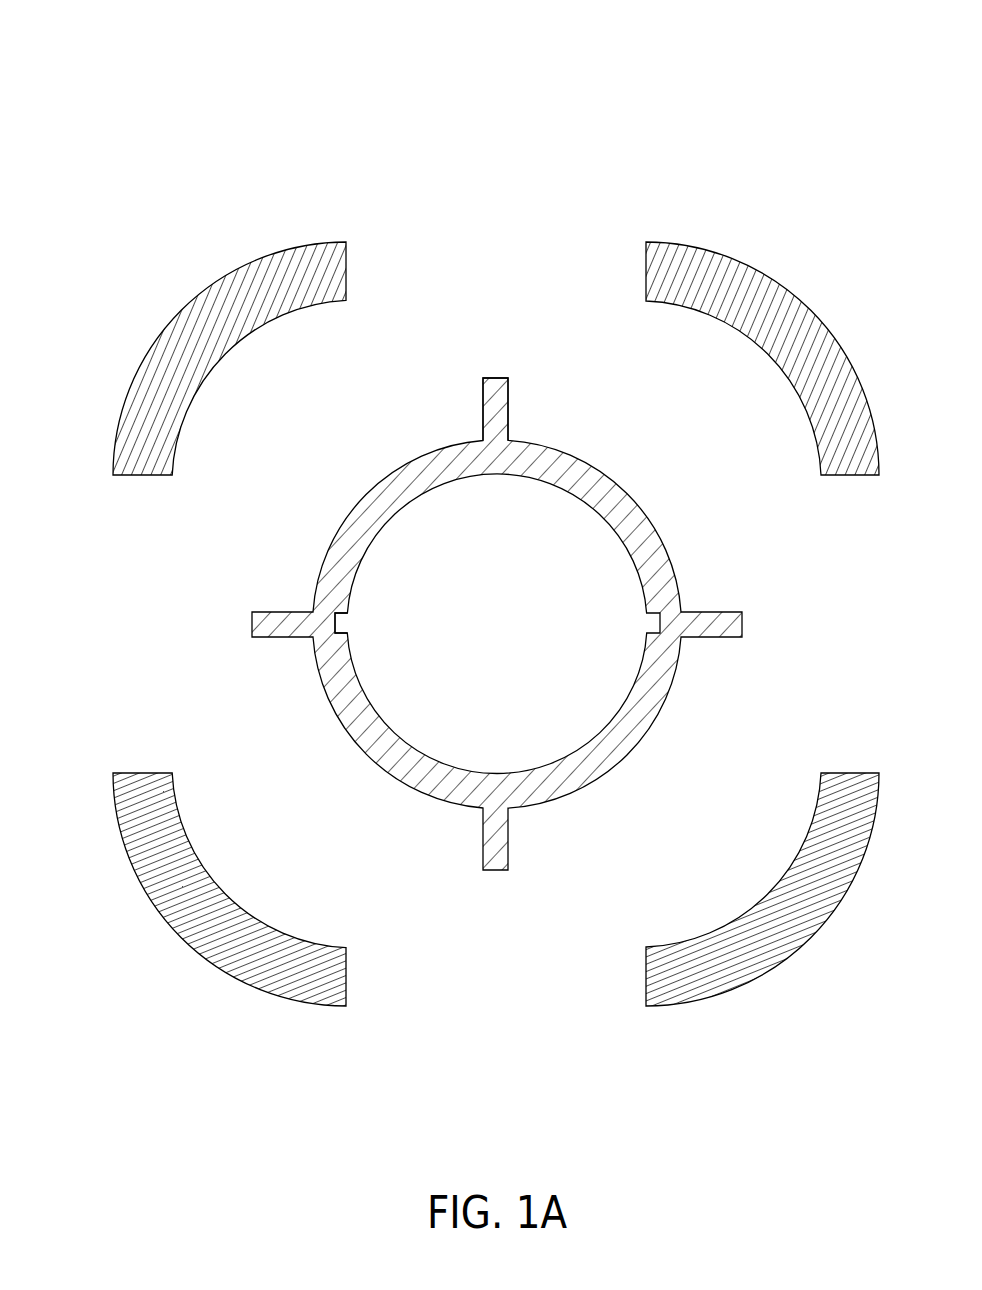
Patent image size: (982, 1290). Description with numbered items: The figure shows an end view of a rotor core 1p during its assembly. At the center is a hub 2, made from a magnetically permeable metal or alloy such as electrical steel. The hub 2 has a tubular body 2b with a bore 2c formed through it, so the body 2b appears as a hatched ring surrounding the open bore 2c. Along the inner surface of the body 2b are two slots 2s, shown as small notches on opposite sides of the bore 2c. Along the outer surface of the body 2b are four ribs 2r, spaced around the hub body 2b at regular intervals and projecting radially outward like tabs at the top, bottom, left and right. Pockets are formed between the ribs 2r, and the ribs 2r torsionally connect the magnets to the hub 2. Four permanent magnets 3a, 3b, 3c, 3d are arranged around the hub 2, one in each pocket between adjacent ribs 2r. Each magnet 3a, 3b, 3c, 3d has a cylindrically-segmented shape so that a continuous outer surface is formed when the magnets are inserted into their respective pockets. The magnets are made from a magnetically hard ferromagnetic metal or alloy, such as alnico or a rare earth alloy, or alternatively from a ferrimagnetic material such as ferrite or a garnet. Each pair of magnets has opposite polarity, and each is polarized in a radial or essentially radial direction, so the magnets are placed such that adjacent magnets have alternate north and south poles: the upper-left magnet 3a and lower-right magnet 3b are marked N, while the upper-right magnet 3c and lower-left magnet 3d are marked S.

The rotor core 1p is at (92, 77).
The hub 2 is at (482, 294).
The tubular body 2b is at (597, 470).
The ribs 2r is at (483, 397).
The slots 2s is at (340, 626).
The bore 2c is at (503, 641).
The permanent magnet 3a is at (270, 254).
The permanent magnet 3b is at (765, 968).
The permanent magnet 3c is at (744, 263).
The permanent magnet 3d is at (223, 967).